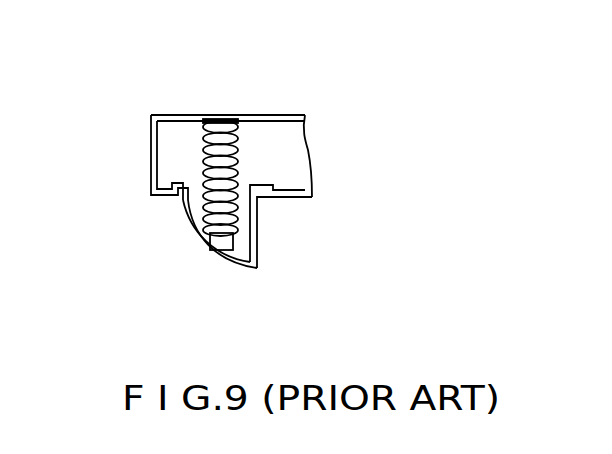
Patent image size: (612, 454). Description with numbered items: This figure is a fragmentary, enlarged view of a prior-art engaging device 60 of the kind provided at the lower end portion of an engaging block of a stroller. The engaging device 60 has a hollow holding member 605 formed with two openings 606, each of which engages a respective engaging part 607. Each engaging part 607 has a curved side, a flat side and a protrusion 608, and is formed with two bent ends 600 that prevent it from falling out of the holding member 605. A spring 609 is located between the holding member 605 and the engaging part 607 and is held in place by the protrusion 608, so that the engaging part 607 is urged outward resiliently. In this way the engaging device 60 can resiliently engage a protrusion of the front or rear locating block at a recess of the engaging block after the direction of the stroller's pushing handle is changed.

The engaging device 60 is at (268, 99).
The bent end 600 is at (173, 182).
The holding member 605 is at (290, 143).
The opening 606 is at (257, 191).
The engaging part 607 is at (247, 277).
The protrusion 608 is at (223, 247).
The spring 609 is at (207, 185).